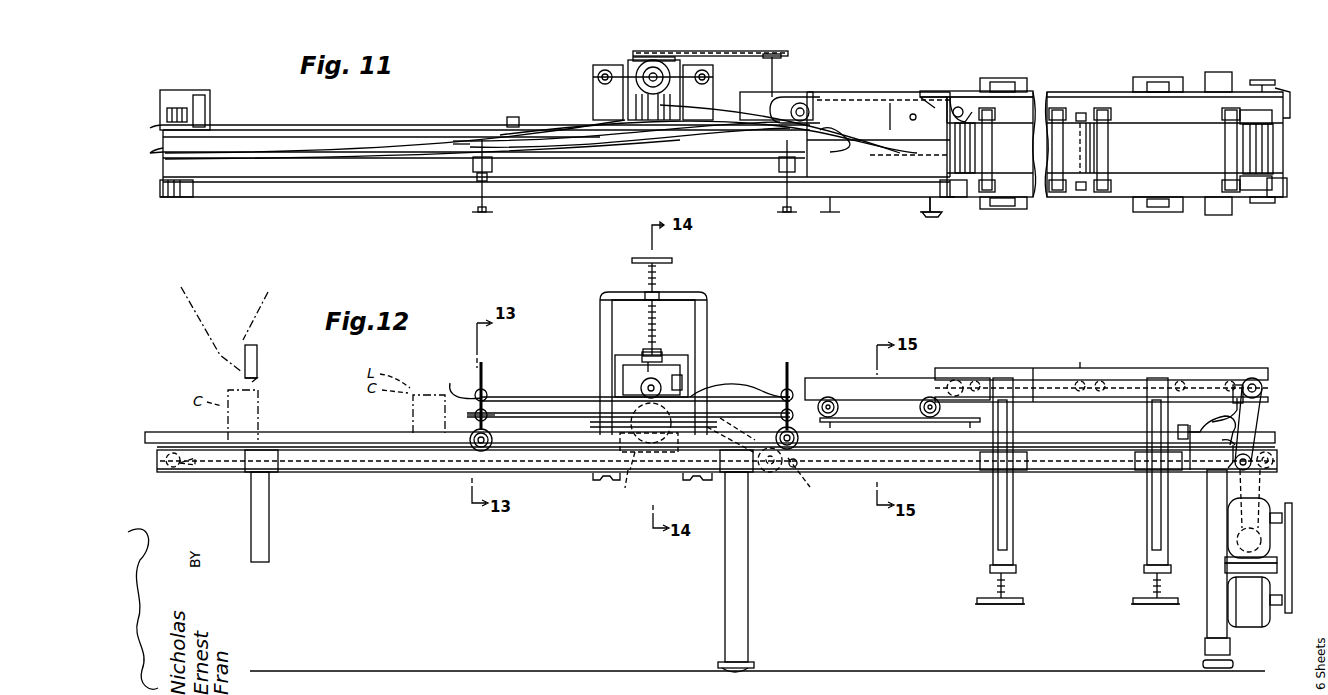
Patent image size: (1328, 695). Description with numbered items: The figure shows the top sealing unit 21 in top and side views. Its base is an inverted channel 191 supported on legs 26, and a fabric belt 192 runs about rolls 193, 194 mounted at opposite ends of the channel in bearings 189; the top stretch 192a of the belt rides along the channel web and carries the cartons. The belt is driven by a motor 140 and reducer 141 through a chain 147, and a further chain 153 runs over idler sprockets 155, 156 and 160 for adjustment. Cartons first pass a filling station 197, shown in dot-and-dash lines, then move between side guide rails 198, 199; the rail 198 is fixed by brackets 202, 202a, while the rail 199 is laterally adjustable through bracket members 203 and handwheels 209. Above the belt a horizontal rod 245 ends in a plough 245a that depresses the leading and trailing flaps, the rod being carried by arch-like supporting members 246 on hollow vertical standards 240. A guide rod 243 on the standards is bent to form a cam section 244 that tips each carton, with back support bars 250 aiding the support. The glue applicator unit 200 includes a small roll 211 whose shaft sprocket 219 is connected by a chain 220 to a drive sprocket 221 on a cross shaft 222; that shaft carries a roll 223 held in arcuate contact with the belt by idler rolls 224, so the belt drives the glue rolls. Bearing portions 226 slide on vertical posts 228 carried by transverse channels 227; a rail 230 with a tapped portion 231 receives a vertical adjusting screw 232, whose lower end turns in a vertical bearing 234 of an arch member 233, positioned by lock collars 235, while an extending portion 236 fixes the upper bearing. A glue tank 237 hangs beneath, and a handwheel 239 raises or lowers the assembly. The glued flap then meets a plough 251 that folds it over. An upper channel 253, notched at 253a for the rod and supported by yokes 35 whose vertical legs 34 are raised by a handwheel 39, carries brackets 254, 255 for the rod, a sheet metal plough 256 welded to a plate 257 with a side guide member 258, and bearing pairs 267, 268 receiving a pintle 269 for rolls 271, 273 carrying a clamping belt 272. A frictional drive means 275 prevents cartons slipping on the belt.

In FIG. 11, the top sealing unit 21 is at (204, 209).
In FIG. 12, the top sealing unit 21 is at (352, 483).
In FIG. 12, the legs 26 is at (748, 628).
In FIG. 12, the vertical legs 34 is at (1005, 535).
In FIG. 12, the yoke 35 is at (1147, 568).
In FIG. 12, the handwheel 39 is at (1023, 601).
In FIG. 12, the motor 140 is at (1232, 627).
In FIG. 12, the reducer 141 is at (1235, 533).
In FIG. 12, the chain 147 is at (1262, 500).
In FIG. 12, the chain 153 is at (1265, 385).
In FIG. 12, the idler sprocket 155 is at (1245, 410).
In FIG. 12, the idler sprocket 156 is at (1225, 445).
In FIG. 12, the idler sprocket 160 is at (1218, 430).
In FIG. 11, the bearings 189 is at (158, 197).
In FIG. 11, the inverted channel 191 is at (548, 197).
In FIG. 11, the fabric belt 192 is at (435, 182).
In FIG. 12, the fabric belt 192 is at (388, 462).
In FIG. 12, the top stretch 192a is at (425, 452).
In FIG. 11, the roll 193 is at (165, 118).
In FIG. 12, the roll 194 is at (1268, 458).
In FIG. 12, the filling station 197 is at (262, 352).
In FIG. 11, the side guide rail 198 is at (408, 130).
In FIG. 11, the side guide rail 199 is at (400, 158).
In FIG. 12, the side guide rail 199 is at (230, 442).
In FIG. 11, the glue applicator unit 200 is at (666, 36).
In FIG. 11, the bracket 202 is at (200, 96).
In FIG. 11, the bracket 202a is at (513, 116).
In FIG. 11, the bracket members 203 is at (482, 182).
In FIG. 12, the handwheels 209 is at (492, 452).
In FIG. 12, the small roll 211 is at (641, 388).
In FIG. 11, the sprocket 219 is at (670, 60).
In FIG. 11, the chain 220 is at (740, 55).
In FIG. 11, the drive sprocket 221 is at (778, 58).
In FIG. 11, the cross shaft 222 is at (776, 90).
In FIG. 12, the roll 223 is at (770, 472).
In FIG. 12, the idler rolls 224 is at (808, 482).
In FIG. 11, the bearing portions 226 is at (598, 72).
In FIG. 12, the bearing portions 226 is at (632, 423).
In FIG. 11, the transverse channels 227 is at (593, 84).
In FIG. 12, the transverse channels 227 is at (712, 480).
In FIG. 12, the vertical posts 228 is at (600, 305).
In FIG. 12, the rail 230 is at (612, 296).
In FIG. 12, the tapped portion 231 is at (645, 292).
In FIG. 12, the vertical adjusting screw 232 is at (658, 280).
In FIG. 12, the arch member 233 is at (685, 365).
In FIG. 12, the vertical bearing 234 is at (660, 358).
In FIG. 12, the lock collars 235 is at (643, 353).
In FIG. 12, the extending portion 236 is at (682, 380).
In FIG. 12, the glue tank 237 is at (628, 490).
In FIG. 12, the handwheel 239 is at (668, 258).
In FIG. 12, the hollow vertical standards 240 is at (518, 412).
In FIG. 12, the guide rod 243 is at (520, 396).
In FIG. 11, the cam section 244 is at (613, 160).
In FIG. 11, the horizontal rod 245 is at (480, 140).
In FIG. 12, the plough 245a is at (452, 384).
In FIG. 12, the arch-like supporting members 246 is at (790, 372).
In FIG. 11, the back support bars 250 is at (615, 118).
In FIG. 11, the plough 251 is at (722, 110).
In FIG. 12, the plough 251 is at (745, 388).
In FIG. 11, the upper channel 253 is at (1100, 92).
In FIG. 12, the upper channel 253 is at (1205, 358).
In FIG. 11, the notch 253a is at (930, 90).
In FIG. 11, the bracket 254 is at (818, 85).
In FIG. 11, the bracket 255 is at (884, 110).
In FIG. 11, the plough 256 is at (900, 150).
In FIG. 11, the plate 257 is at (840, 160).
In FIG. 12, the side guide member 258 is at (905, 398).
In FIG. 11, the bearing pair 267 is at (952, 198).
In FIG. 11, the bearing pair 268 is at (1250, 110).
In FIG. 11, the pintle 269 is at (975, 98).
In FIG. 11, the roll 271 is at (962, 198).
In FIG. 12, the roll 271 is at (1245, 384).
In FIG. 11, the clamping belt 272 is at (1115, 143).
In FIG. 11, the roll 273 is at (1283, 90).
In FIG. 11, the frictional drive means 275 is at (897, 100).